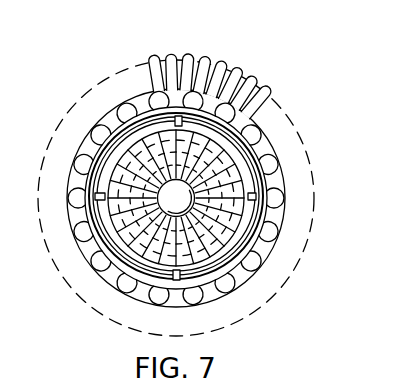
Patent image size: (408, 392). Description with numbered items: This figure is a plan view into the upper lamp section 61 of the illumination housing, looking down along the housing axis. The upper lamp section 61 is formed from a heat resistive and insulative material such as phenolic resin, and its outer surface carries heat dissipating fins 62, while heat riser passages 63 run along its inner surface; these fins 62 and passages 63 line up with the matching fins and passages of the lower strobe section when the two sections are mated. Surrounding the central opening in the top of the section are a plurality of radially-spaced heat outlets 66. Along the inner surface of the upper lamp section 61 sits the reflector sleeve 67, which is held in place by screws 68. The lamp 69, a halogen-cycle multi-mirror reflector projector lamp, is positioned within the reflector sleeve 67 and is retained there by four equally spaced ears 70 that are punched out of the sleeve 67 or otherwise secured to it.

The upper lamp section 61 is at (302, 273).
The heat dissipating fins 62 is at (220, 63).
The heat riser passages 63 is at (128, 108).
The heat outlets 66 is at (95, 258).
The reflector sleeve 67 is at (252, 158).
The screws 68 is at (253, 118).
The lamp 69 is at (242, 185).
The ears 70 is at (182, 124).